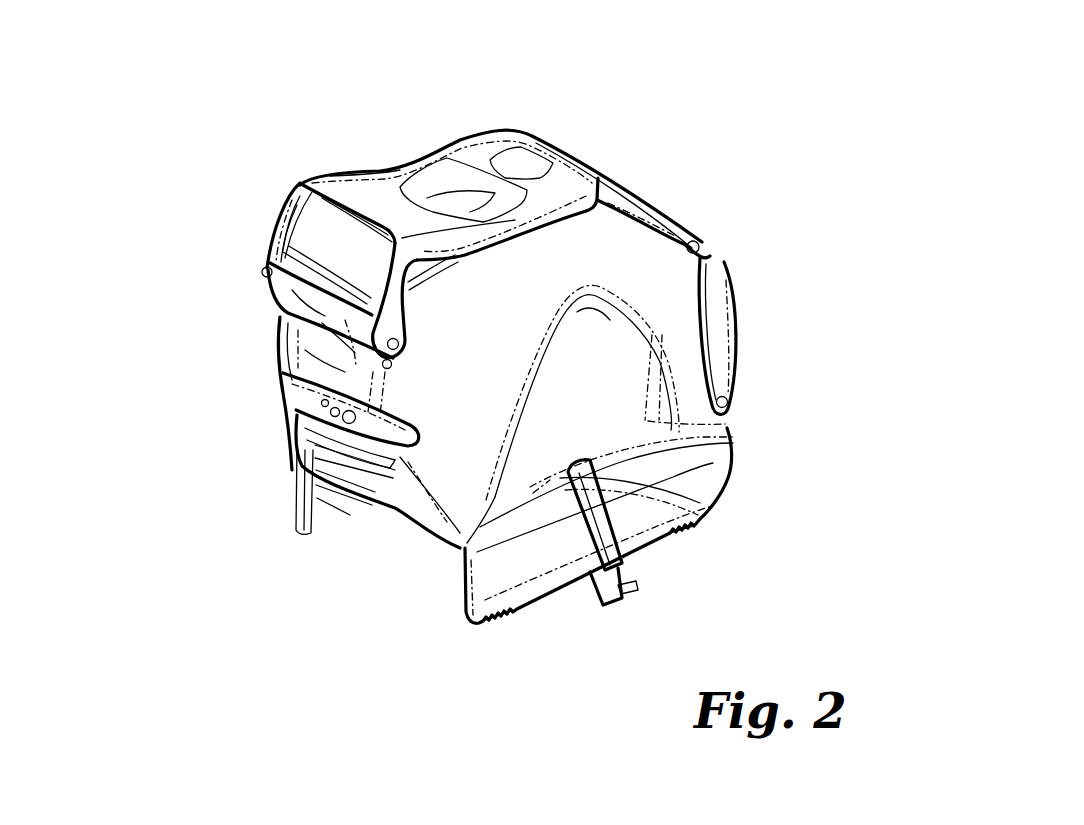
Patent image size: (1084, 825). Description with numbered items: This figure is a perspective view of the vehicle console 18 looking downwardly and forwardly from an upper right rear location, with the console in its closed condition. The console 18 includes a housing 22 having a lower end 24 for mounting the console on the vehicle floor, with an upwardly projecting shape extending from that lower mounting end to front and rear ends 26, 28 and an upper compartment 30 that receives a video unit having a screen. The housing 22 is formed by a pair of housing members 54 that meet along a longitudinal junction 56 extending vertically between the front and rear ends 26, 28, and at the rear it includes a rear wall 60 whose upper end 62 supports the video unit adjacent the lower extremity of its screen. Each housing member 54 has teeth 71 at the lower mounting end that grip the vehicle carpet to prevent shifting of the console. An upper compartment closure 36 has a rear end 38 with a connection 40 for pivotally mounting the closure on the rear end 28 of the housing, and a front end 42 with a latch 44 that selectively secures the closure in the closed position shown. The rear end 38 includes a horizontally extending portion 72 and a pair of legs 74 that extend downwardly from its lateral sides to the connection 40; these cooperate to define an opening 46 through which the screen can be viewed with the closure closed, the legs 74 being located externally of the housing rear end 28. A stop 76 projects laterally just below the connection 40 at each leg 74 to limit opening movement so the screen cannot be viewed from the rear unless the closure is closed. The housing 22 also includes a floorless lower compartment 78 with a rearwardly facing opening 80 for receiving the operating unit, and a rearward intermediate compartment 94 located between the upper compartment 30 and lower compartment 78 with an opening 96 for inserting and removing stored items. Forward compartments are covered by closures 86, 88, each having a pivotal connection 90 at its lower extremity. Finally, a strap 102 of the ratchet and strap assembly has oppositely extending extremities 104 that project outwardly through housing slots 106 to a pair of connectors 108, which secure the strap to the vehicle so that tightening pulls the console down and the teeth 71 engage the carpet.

The vehicle console 18 is at (663, 132).
The housing 22 is at (665, 258).
The lower end 24 is at (487, 593).
The front end 26 is at (700, 306).
The rear end 28 is at (268, 364).
The upper compartment 30 is at (333, 258).
The upper compartment closure 36 is at (343, 166).
The rear end of the upper compartment closure 38 is at (296, 188).
The connection 40 is at (262, 271).
The front end of the upper compartment closure 42 is at (507, 130).
The latch 44 is at (533, 157).
The opening 46 is at (297, 207).
The housing members 54 is at (283, 345).
The longitudinal junction 56 is at (280, 325).
The rear wall 60 is at (371, 430).
The upper end of the rear wall 62 is at (305, 287).
The teeth 71 is at (510, 614).
The horizontally extending portion 72 is at (347, 202).
The legs 74 is at (287, 212).
The stop 76 is at (392, 368).
The lower compartment 78 is at (427, 552).
The rearwardly facing opening 80 is at (317, 502).
The closure 86 is at (668, 197).
The closure 88 is at (720, 323).
The pivotal connection 90 is at (705, 243).
The rearward intermediate compartment 94 is at (350, 463).
The opening 96 is at (300, 441).
The strap 102 is at (720, 447).
The strap extremities 104 is at (690, 495).
The housing slots 106 is at (590, 463).
The connectors 108 is at (640, 583).